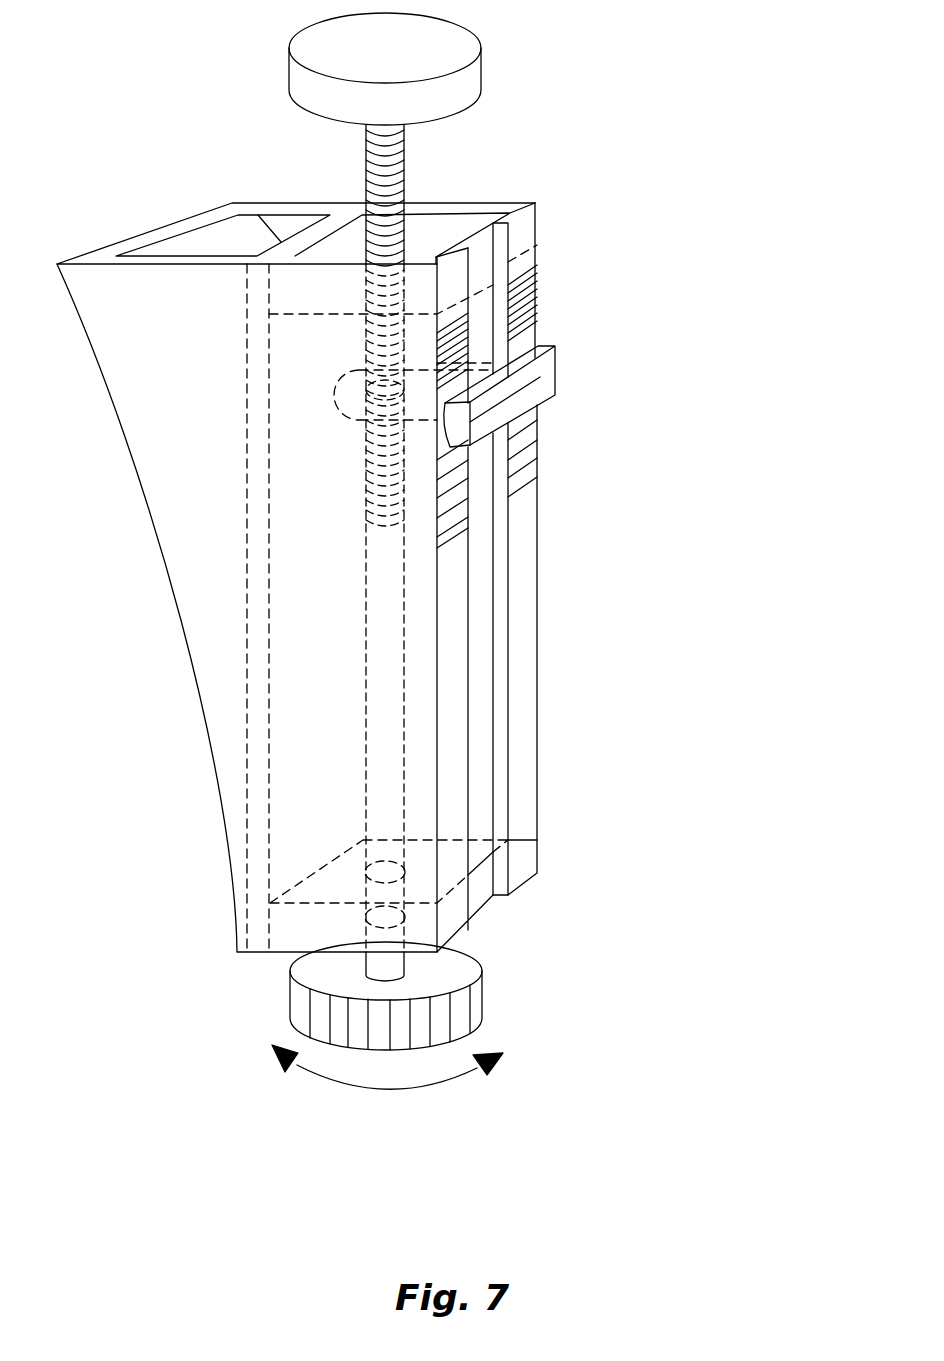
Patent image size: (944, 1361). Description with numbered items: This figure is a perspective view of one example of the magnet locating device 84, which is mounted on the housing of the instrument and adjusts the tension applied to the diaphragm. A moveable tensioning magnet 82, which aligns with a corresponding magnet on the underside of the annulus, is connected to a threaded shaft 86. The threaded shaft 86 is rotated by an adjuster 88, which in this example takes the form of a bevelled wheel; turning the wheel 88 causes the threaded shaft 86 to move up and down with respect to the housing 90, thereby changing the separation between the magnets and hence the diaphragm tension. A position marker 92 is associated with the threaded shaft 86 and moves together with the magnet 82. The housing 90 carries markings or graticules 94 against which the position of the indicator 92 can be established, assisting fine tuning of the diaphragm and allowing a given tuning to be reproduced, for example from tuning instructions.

The tensioning magnet 82 is at (455, 88).
The magnet locating device 84 is at (645, 693).
The threaded shaft 86 is at (390, 180).
The adjuster 88 is at (465, 1012).
The housing 90 is at (522, 840).
The position marker 92 is at (532, 395).
The graticules 94 is at (528, 308).